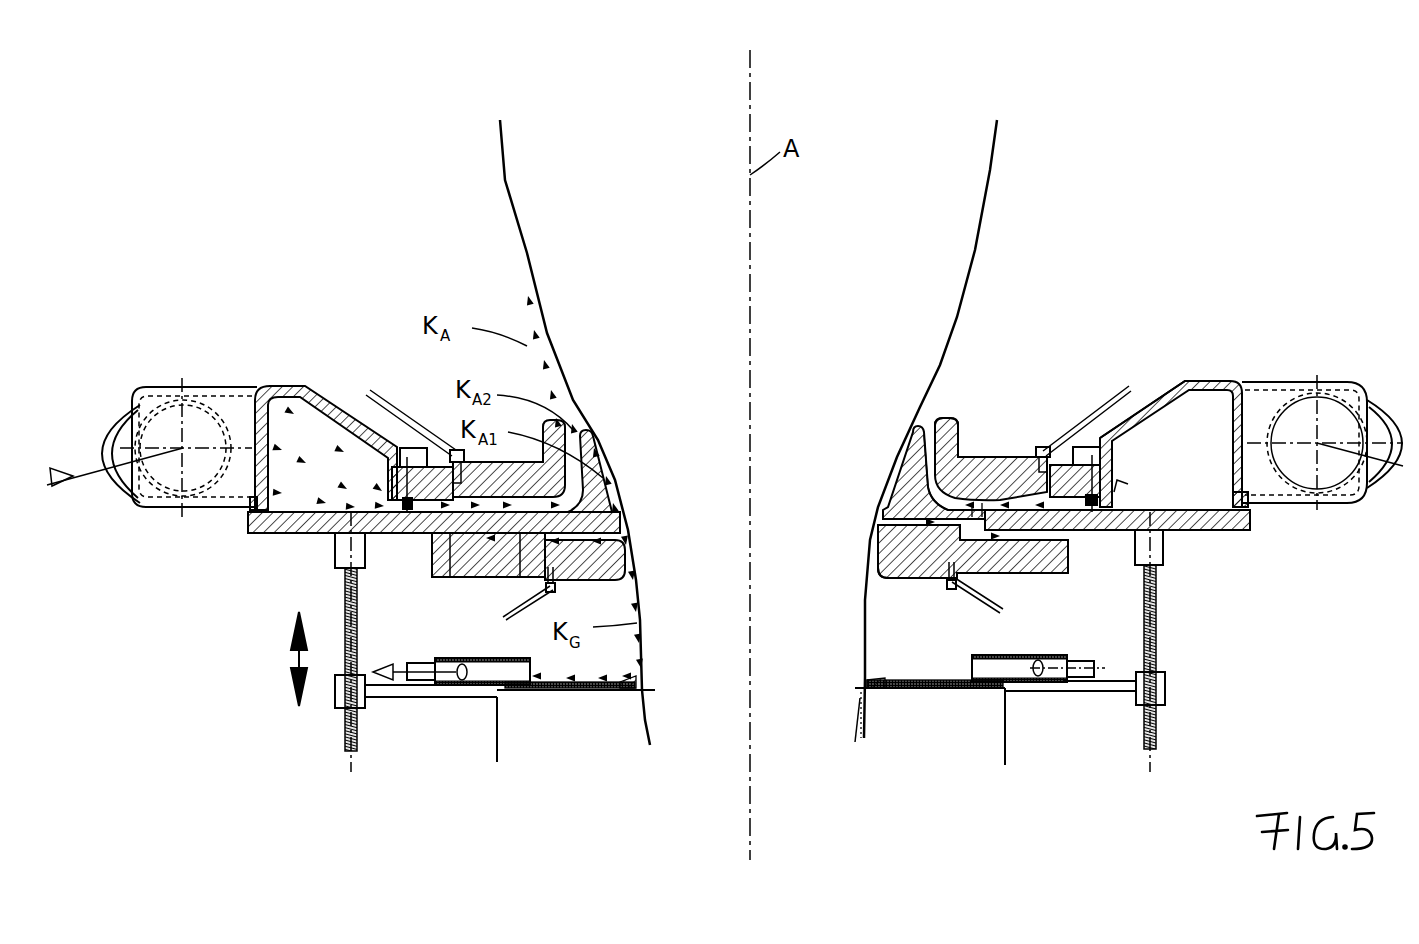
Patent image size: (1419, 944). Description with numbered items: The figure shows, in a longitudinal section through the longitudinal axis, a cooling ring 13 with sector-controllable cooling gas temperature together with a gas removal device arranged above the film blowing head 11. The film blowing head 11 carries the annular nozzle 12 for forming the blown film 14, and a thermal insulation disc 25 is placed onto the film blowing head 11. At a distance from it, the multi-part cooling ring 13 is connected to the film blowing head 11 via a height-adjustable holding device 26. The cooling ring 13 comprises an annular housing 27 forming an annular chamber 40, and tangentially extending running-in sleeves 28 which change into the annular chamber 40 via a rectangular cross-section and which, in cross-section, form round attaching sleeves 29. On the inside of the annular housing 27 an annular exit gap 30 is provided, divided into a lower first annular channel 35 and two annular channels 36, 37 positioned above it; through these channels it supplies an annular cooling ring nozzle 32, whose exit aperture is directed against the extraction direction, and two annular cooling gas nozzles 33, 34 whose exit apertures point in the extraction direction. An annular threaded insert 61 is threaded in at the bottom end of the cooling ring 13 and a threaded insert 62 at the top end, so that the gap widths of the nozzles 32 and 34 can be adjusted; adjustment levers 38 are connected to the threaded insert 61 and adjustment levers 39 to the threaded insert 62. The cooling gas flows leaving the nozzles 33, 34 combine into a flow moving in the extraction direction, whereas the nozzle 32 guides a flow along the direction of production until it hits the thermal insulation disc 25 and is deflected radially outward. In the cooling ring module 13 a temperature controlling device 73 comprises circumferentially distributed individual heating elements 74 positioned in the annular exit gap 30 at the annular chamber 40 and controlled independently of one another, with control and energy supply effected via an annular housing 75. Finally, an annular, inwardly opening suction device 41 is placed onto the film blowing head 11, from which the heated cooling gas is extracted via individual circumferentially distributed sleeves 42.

The film blowing head 11 is at (1003, 730).
The annular nozzle 12 is at (866, 740).
The cooling ring 13 is at (1182, 343).
The blown film 14 is at (977, 257).
The thermal insulation disc 25 is at (907, 688).
The height-adjustable holding device 26 is at (1160, 692).
The annular housing 27 is at (1192, 381).
The running-in sleeves 28 is at (1259, 382).
The attaching sleeves 29 is at (1372, 418).
The annular exit gap 30 is at (1068, 572).
The annular cooling ring nozzle 32 is at (878, 556).
The annular cooling gas nozzle 33 is at (888, 505).
The annular cooling gas nozzle 34 is at (941, 426).
The lower first annular channel 35 is at (903, 580).
The annular channel 36 is at (950, 500).
The annular channel 37 is at (999, 499).
The adjustment levers 38 is at (977, 612).
The adjustment levers 39 is at (1090, 410).
The annular chamber 40 is at (1220, 428).
The suction device 41 is at (1027, 655).
The sleeves 42 is at (1078, 657).
The annular threaded insert 61 is at (938, 590).
The threaded insert 62 is at (1025, 468).
The temperature controlling device 73 is at (1118, 482).
The heating elements 74 is at (1096, 508).
The annular housing 75 is at (1108, 450).